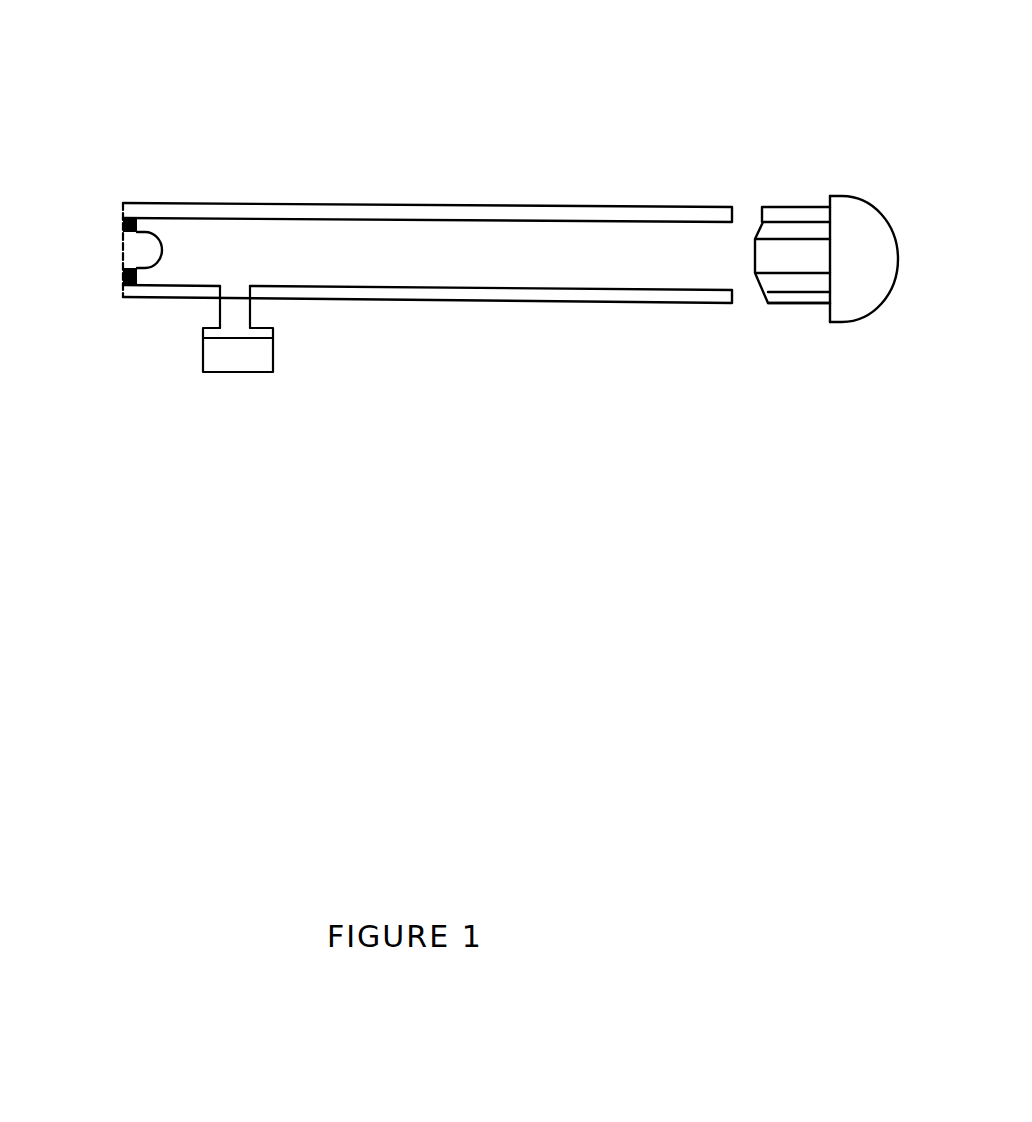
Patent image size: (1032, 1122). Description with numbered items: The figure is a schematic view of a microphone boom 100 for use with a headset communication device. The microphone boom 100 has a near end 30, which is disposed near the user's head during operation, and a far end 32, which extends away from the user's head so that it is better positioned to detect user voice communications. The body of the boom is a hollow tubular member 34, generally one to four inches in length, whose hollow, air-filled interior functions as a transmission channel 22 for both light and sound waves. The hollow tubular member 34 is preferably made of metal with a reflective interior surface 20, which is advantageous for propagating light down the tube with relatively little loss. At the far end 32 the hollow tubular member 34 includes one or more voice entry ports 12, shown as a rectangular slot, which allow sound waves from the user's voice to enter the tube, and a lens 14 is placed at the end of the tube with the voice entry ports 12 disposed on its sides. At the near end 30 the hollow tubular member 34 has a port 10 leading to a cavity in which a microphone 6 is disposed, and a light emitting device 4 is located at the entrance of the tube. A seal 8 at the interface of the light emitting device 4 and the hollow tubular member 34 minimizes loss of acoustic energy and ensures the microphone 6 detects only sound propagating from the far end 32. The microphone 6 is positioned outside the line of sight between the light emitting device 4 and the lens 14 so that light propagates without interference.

The microphone boom 100 is at (482, 36).
The hollow tubular member 34 is at (368, 201).
The reflective interior surface 20 is at (371, 274).
The transmission channel 22 is at (472, 262).
The near end 30 is at (140, 341).
The seal 8 is at (117, 234).
The light emitting device 4 is at (133, 258).
The port 10 is at (246, 275).
The microphone 6 is at (238, 350).
The voice entry port 12 is at (754, 197).
The lens 14 is at (864, 259).
The far end 32 is at (784, 358).